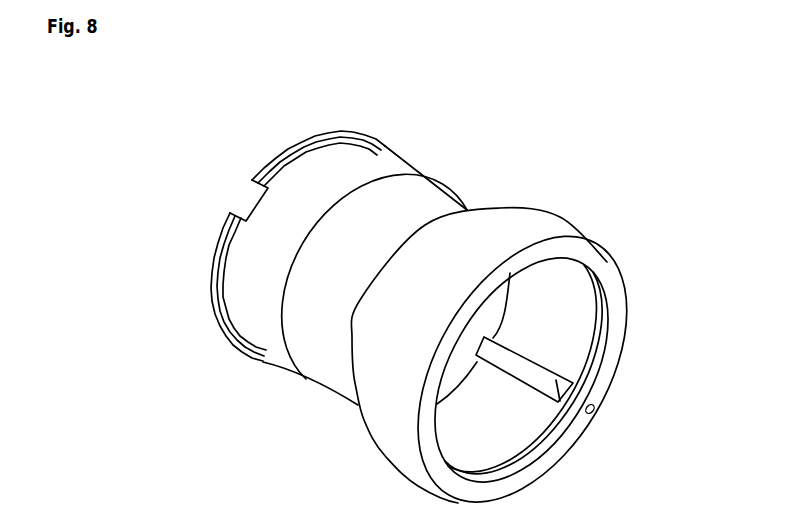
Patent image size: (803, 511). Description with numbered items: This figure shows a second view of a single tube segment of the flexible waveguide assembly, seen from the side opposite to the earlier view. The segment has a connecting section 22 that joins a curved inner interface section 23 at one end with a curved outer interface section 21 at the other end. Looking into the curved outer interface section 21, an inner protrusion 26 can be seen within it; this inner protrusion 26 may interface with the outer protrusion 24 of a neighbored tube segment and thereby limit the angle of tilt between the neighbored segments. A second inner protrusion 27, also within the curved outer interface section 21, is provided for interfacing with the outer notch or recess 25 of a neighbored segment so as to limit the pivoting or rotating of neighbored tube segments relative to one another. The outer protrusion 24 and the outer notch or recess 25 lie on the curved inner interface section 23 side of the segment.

The curved outer interface section 21 is at (550, 211).
The connecting section 22 is at (444, 196).
The curved inner interface section 23 is at (397, 156).
The outer protrusion 24 is at (358, 131).
The outer notch or recess 25 is at (244, 202).
The inner protrusion 26 is at (590, 297).
The second inner protrusion 27 is at (540, 378).